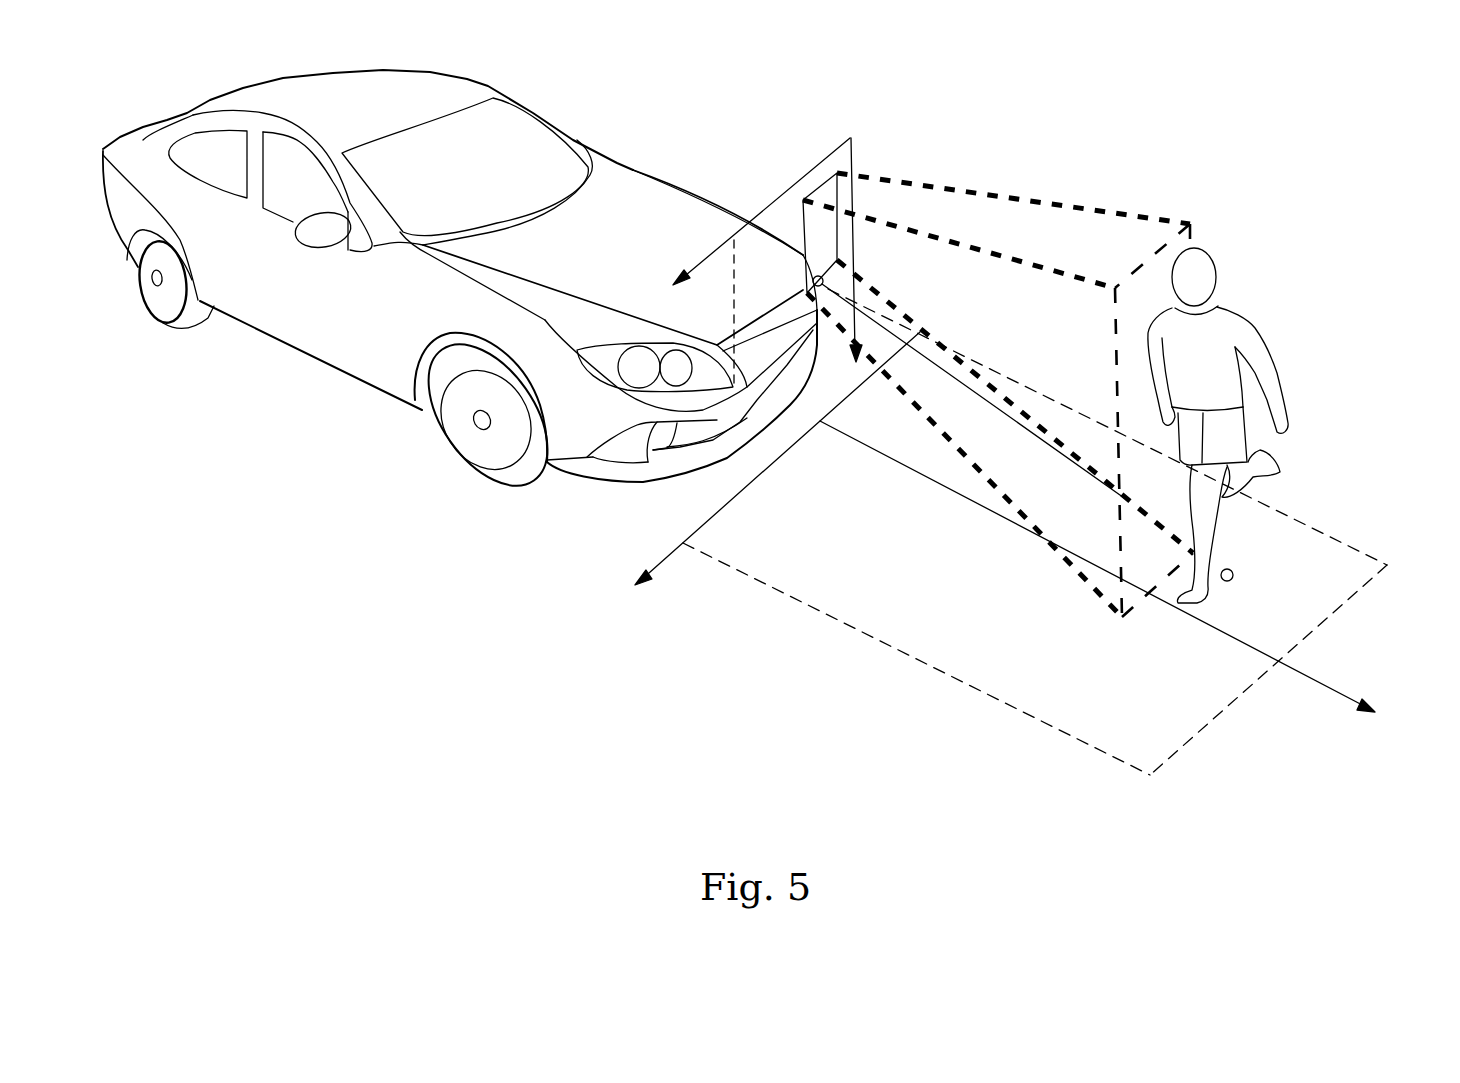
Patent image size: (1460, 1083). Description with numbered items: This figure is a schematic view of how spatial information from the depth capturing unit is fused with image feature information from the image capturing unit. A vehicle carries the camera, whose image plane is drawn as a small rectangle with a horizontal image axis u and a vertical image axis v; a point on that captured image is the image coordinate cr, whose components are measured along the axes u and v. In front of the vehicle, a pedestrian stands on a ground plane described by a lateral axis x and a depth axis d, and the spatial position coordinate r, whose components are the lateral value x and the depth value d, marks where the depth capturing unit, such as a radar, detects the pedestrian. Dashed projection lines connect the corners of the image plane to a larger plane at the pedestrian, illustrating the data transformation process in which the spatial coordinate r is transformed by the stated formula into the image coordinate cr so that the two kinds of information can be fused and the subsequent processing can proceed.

The horizontal image coordinate u is at (761, 211).
The vertical image coordinate v is at (861, 250).
The lateral spatial coordinate x is at (777, 458).
The depth coordinate d is at (1097, 566).
The image point coordinate c_r(u_r,v_r) cr is at (822, 277).
The spatial position coordinate r(x,d) r is at (1233, 577).